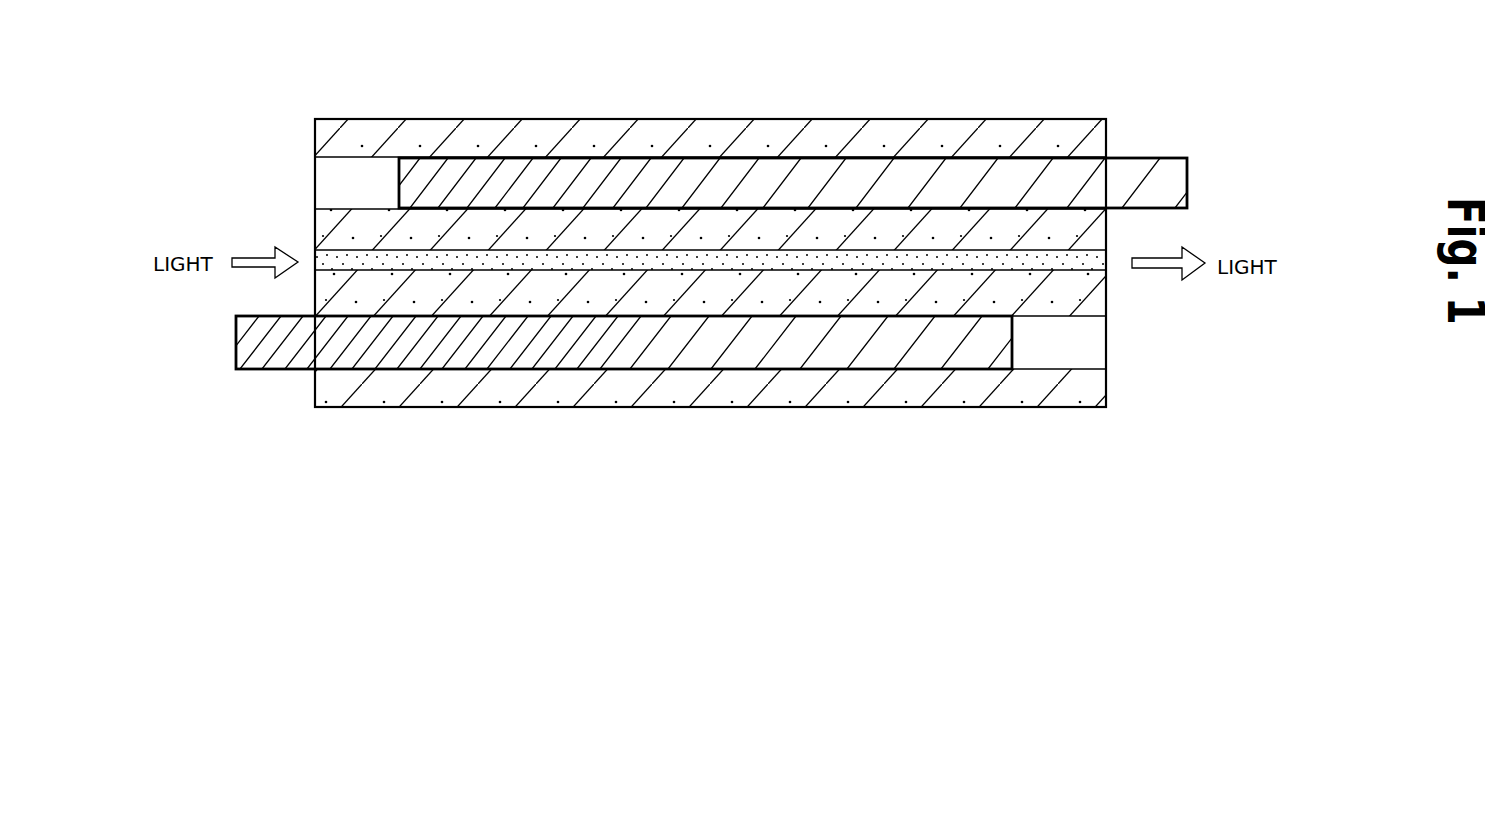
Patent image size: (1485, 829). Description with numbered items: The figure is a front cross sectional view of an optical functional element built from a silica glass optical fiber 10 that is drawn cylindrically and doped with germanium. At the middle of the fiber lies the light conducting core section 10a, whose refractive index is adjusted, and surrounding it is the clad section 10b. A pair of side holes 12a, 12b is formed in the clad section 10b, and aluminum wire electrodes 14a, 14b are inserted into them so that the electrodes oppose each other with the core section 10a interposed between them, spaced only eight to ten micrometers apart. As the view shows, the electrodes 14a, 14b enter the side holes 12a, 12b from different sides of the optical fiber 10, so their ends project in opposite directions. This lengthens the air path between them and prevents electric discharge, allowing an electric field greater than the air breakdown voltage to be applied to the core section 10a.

The optical fiber 10 is at (773, 119).
The core section 10a is at (935, 264).
The clad section 10b is at (1050, 137).
The side hole 12a is at (512, 160).
The side hole 12b is at (408, 362).
The electrode 14a is at (650, 167).
The electrode 14b is at (803, 342).